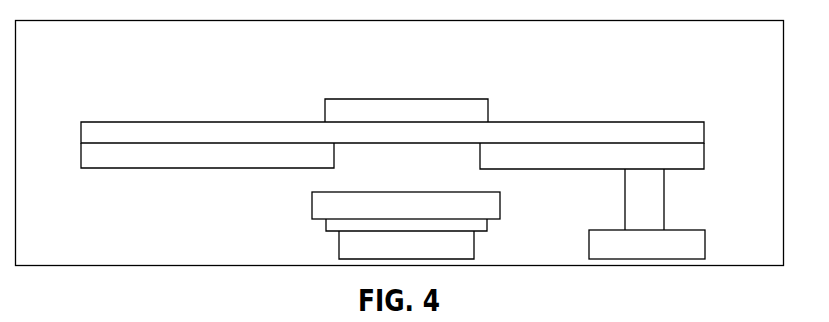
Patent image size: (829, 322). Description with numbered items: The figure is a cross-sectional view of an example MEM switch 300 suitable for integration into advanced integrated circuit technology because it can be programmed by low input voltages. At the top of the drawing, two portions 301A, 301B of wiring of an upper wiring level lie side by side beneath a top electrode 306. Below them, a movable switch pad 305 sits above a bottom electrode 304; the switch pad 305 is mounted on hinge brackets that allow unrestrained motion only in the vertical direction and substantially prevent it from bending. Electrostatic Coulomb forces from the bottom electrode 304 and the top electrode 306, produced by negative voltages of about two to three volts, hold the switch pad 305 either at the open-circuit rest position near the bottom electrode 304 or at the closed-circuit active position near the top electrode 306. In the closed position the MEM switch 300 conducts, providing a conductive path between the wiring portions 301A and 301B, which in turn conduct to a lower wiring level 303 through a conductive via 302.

The MEM switch 300 is at (158, 56).
The wiring portion 301A is at (136, 152).
The wiring portion 301B is at (693, 156).
The conductive via 302 is at (650, 198).
The lower wiring level 303 is at (694, 246).
The bottom electrode 304 is at (467, 251).
The switch pad 305 is at (312, 207).
The top electrode 306 is at (356, 107).